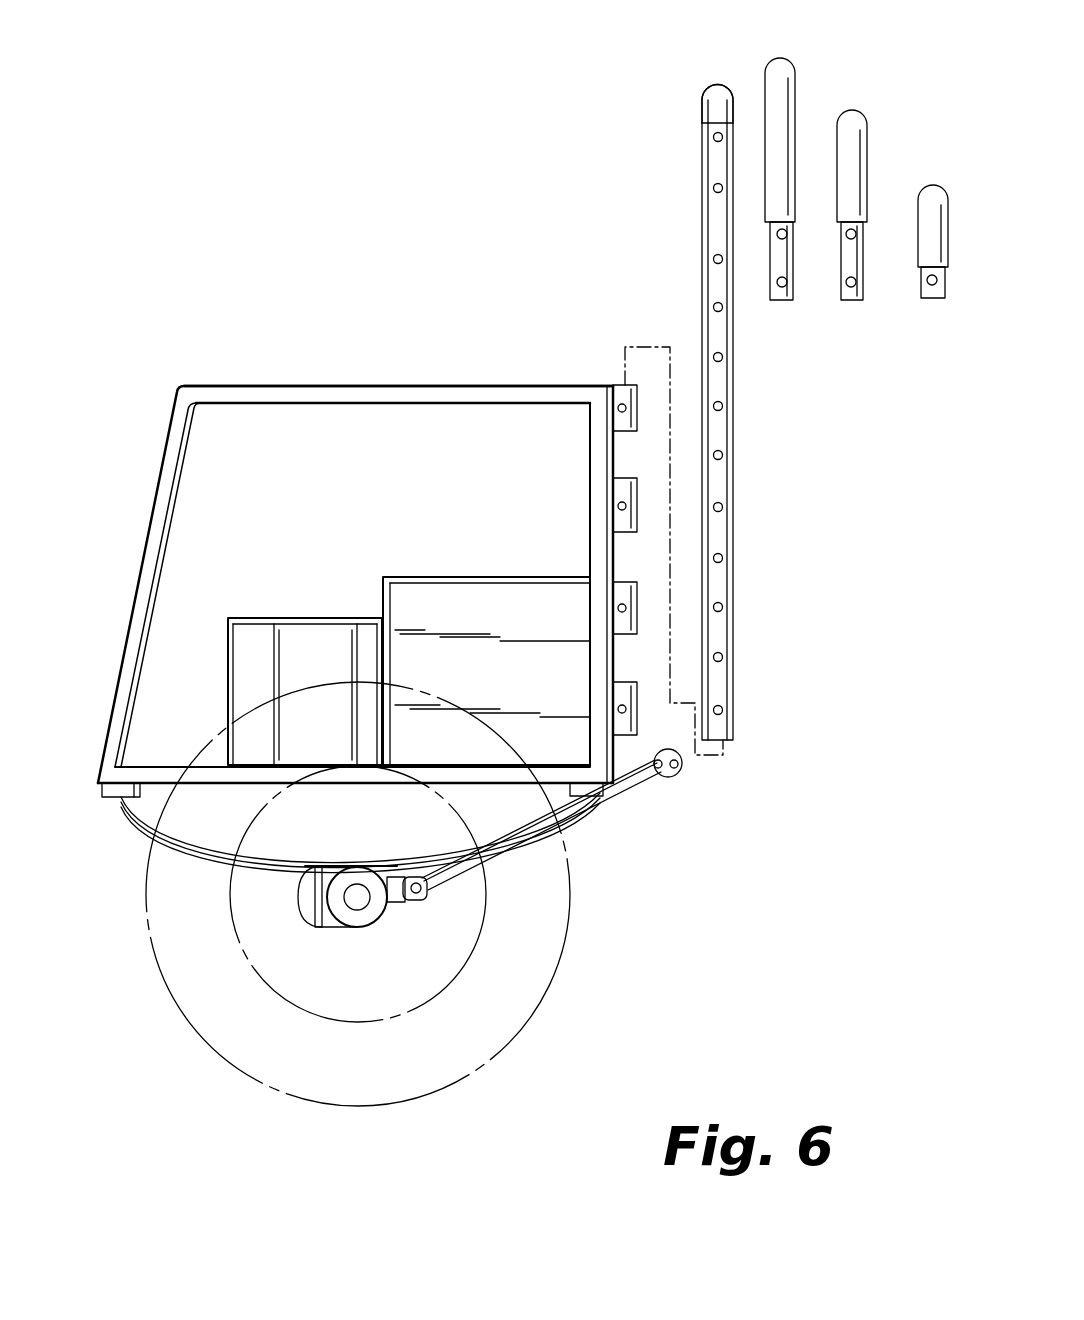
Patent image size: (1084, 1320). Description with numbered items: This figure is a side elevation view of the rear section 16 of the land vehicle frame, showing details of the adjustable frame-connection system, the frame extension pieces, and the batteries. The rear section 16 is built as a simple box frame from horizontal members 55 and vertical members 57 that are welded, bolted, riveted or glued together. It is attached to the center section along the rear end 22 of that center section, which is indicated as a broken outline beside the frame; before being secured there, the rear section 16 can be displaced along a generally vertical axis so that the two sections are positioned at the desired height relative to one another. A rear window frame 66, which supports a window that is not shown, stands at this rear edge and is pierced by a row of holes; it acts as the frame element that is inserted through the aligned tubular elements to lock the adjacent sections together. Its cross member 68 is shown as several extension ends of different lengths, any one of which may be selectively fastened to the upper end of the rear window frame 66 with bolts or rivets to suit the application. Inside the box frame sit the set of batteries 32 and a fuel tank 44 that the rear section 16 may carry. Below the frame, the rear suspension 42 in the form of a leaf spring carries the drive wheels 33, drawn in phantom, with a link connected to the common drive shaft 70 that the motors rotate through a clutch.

The rear section 16 is at (387, 622).
The rear end 22 is at (637, 332).
The batteries 32 is at (492, 610).
The drive wheels 33 is at (538, 967).
The rear suspension 42 is at (140, 810).
The fuel tank 44 is at (302, 640).
The horizontal members 55 is at (445, 390).
The vertical members 57 is at (168, 462).
The rear window frame 66 is at (752, 450).
The cross member 68 is at (702, 115).
The common drive shaft 70 is at (632, 775).